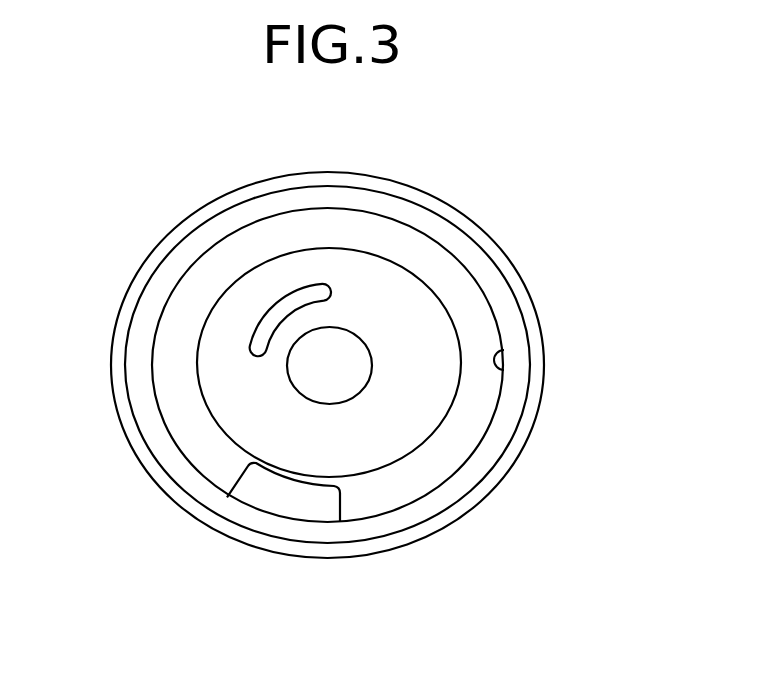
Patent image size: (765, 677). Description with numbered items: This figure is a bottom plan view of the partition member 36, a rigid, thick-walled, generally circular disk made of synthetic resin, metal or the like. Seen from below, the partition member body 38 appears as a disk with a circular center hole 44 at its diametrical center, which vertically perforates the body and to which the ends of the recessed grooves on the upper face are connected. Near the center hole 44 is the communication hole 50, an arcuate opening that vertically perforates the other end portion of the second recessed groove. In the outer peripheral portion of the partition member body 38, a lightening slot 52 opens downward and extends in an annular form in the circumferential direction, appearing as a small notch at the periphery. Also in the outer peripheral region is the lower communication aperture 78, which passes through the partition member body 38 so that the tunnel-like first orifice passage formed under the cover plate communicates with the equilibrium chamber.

The partition member 36 is at (490, 193).
The partition member body 38 is at (152, 243).
The center hole 44 is at (298, 352).
The communication hole 50 is at (327, 293).
The lightening slot 52 is at (502, 367).
The lower communication aperture 78 is at (336, 512).